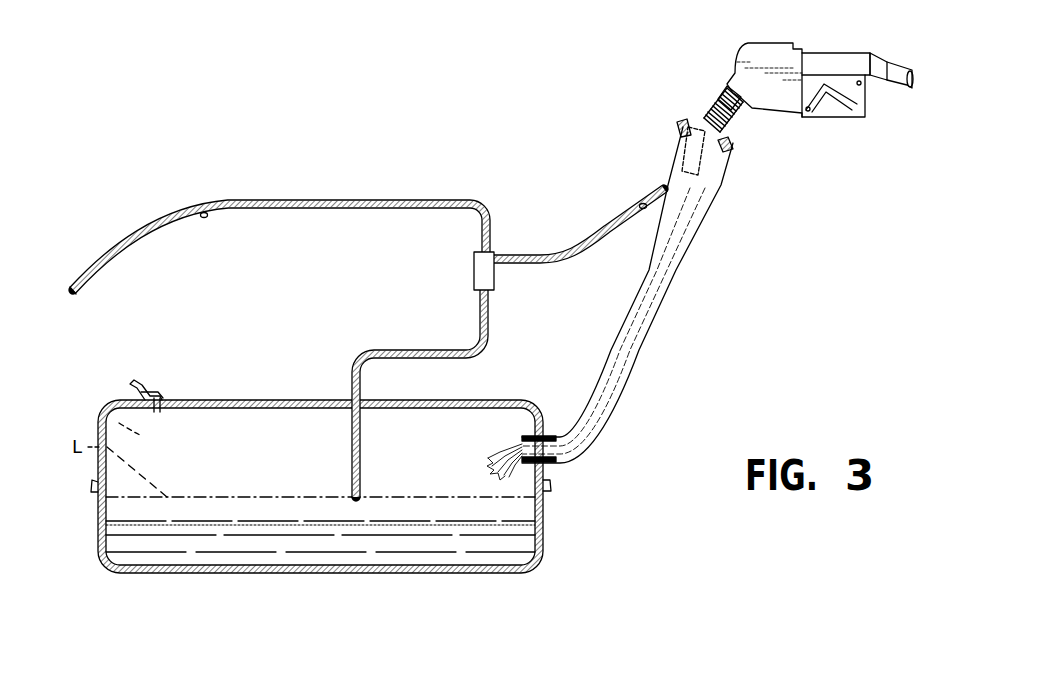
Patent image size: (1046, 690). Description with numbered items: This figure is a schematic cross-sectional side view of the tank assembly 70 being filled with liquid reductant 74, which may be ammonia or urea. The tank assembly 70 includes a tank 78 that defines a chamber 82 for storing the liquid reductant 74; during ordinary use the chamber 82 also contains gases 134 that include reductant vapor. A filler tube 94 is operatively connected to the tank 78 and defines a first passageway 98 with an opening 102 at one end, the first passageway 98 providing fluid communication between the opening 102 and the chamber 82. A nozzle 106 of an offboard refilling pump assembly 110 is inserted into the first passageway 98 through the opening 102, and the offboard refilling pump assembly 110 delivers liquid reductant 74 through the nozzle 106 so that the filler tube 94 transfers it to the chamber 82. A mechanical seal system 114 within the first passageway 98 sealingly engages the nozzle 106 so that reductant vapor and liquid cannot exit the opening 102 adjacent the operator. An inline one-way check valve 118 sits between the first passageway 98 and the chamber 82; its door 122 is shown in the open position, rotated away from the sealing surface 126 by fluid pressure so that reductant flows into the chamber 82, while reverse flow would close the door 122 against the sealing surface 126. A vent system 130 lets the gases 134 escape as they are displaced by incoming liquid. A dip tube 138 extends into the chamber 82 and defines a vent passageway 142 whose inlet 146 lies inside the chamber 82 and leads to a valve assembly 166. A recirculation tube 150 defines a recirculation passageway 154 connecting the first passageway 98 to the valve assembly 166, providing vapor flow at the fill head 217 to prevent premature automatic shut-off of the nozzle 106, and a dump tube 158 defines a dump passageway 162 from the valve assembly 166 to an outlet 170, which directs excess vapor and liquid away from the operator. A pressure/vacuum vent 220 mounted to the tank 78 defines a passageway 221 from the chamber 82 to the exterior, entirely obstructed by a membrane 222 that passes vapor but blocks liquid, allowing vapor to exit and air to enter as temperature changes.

The tank assembly 70 is at (183, 170).
The liquid reductant 74 is at (680, 232).
The tank 78 is at (157, 576).
The chamber 82 is at (256, 482).
The filler tube 94 is at (646, 295).
The first passageway 98 is at (663, 292).
The opening 102 is at (745, 117).
The nozzle 106 is at (690, 145).
The offboard refilling pump assembly 110 is at (763, 53).
The mechanical seal system 114 is at (717, 155).
The one-way check valve 118 is at (529, 435).
The door 122 is at (521, 438).
The sealing surface 126 is at (563, 466).
The vent system 130 is at (290, 208).
The gases 134 is at (132, 438).
The dip tube 138 is at (380, 397).
The vent passageway 142 is at (380, 397).
The inlet 146 is at (348, 505).
The recirculation tube 150 is at (579, 188).
The recirculation passageway 154 is at (641, 203).
The dump tube 158 is at (278, 218).
The dump passageway 162 is at (206, 218).
The valve assembly 166 is at (478, 267).
The outlet 170 is at (72, 268).
The fill head 217 is at (725, 148).
The pressure/vacuum vent 220 is at (132, 390).
The passageway 221 is at (158, 405).
The membrane 222 is at (150, 395).